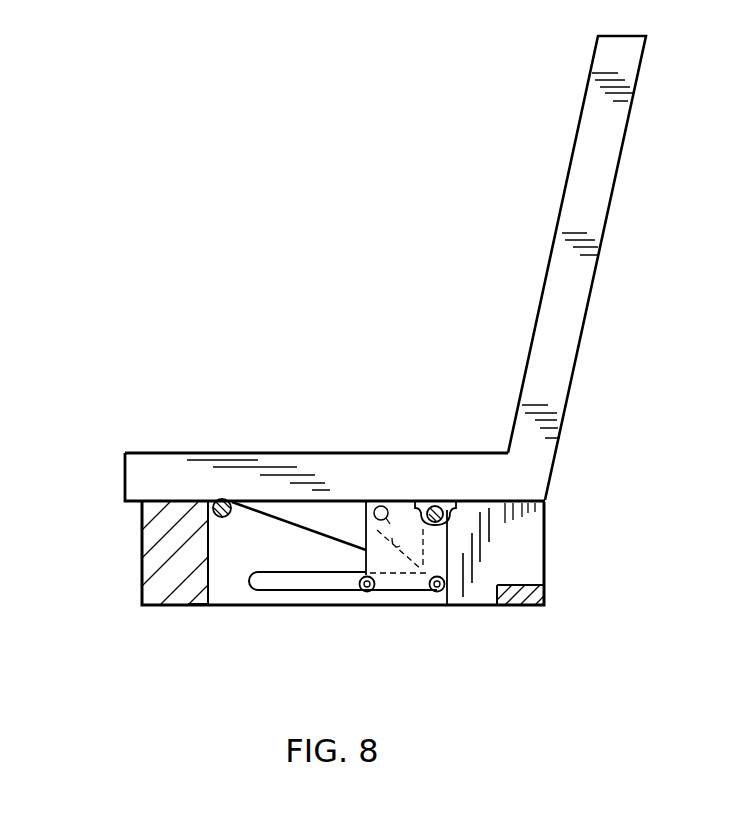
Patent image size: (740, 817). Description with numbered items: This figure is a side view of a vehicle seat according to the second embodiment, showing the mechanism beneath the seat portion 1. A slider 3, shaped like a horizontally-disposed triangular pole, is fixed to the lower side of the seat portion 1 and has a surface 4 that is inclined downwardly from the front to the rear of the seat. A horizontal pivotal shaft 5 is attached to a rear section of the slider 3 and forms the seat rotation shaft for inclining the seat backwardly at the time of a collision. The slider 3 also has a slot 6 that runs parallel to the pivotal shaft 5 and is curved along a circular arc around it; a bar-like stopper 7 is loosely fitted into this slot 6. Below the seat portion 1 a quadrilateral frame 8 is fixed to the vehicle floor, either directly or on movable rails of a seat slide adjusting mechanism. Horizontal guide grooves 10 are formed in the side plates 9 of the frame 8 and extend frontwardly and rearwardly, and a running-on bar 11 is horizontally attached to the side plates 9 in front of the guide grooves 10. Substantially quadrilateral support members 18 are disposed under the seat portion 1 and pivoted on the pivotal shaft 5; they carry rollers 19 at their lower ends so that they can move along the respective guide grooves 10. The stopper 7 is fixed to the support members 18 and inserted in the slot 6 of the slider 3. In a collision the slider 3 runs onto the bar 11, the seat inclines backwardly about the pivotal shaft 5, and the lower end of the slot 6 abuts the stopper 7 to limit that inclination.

The seat portion 1 is at (182, 483).
The slider 3 is at (325, 518).
The surface 4 is at (243, 511).
The pivotal shaft 5 is at (435, 507).
The slot 6 is at (393, 522).
The stopper 7 is at (378, 503).
The frame 8 is at (162, 550).
The side plates 9 is at (483, 588).
The guide grooves 10 is at (268, 590).
The running-on bar 11 is at (197, 573).
The support members 18 is at (450, 532).
The rollers 19 is at (367, 591).